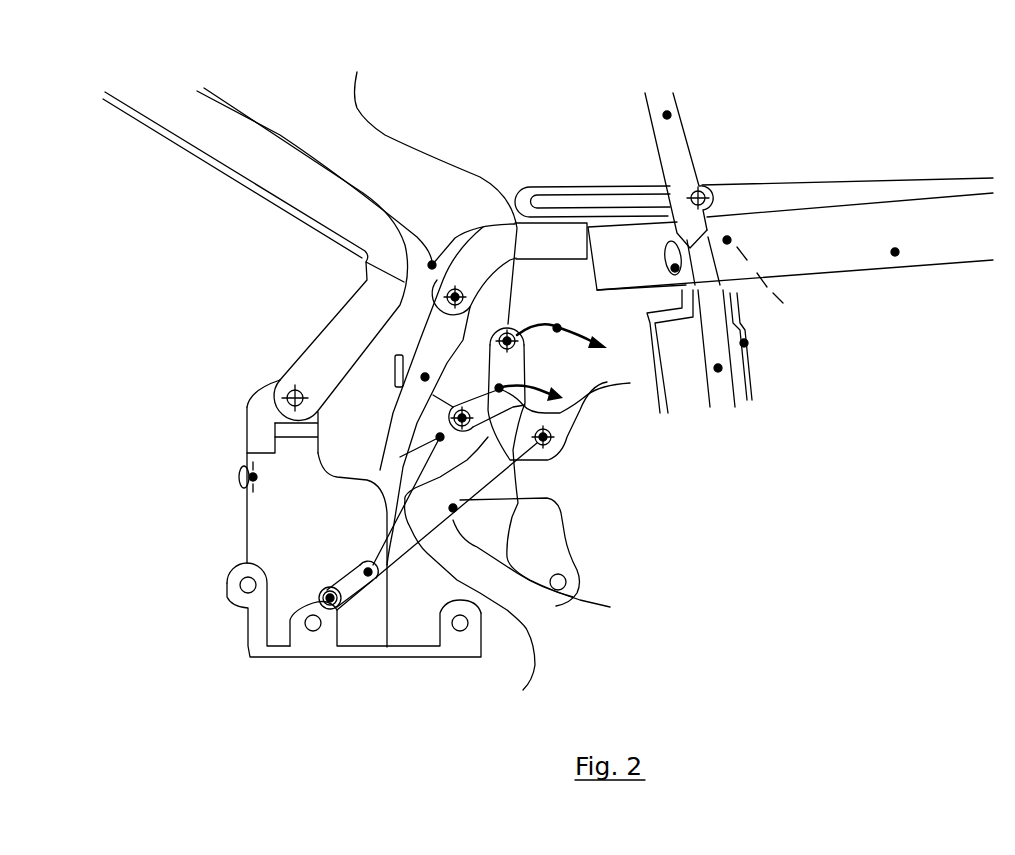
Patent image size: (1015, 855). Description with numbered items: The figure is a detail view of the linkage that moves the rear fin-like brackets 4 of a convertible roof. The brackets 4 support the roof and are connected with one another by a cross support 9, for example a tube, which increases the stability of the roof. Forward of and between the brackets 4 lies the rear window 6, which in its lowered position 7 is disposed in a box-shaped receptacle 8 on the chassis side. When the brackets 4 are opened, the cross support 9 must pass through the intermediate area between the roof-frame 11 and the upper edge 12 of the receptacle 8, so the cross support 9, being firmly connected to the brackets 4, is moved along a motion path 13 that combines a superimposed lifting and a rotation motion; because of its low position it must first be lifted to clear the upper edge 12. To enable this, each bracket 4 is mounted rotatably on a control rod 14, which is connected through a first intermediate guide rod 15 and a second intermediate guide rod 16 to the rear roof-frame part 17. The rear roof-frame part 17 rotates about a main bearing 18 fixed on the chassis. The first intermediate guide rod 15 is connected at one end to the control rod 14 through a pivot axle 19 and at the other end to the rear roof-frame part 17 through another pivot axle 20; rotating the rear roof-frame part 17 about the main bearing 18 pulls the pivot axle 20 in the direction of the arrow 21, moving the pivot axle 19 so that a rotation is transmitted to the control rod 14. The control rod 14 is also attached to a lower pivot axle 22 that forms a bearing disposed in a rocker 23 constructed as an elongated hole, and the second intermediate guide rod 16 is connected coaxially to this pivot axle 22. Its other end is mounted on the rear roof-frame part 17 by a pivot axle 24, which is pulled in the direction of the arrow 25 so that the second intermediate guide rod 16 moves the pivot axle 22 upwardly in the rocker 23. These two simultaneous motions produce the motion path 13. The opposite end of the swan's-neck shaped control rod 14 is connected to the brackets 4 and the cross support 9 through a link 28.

The brackets 4 is at (895, 252).
The rear window 6 is at (727, 240).
The lowered position 7 is at (718, 368).
The receptacle 8 is at (744, 343).
The cross support 9 is at (675, 268).
The roof-frame 11 is at (617, 150).
The upper edge 12 is at (752, 300).
The motion path 13 is at (667, 115).
The control rod 14 is at (425, 377).
The first intermediate guide rod 15 is at (506, 533).
The second intermediate guide rod 16 is at (453, 508).
The rear roof-frame part 17 is at (330, 147).
The main bearing 18 is at (543, 447).
The pivot axle 19 is at (253, 477).
The pivot axle 20 is at (541, 473).
The arrow 21 is at (640, 342).
The lower pivot axle 22 is at (322, 600).
The rocker 23 is at (375, 574).
The pivot axle 24 is at (435, 184).
The arrow 25 is at (557, 328).
The link 28 is at (447, 300).